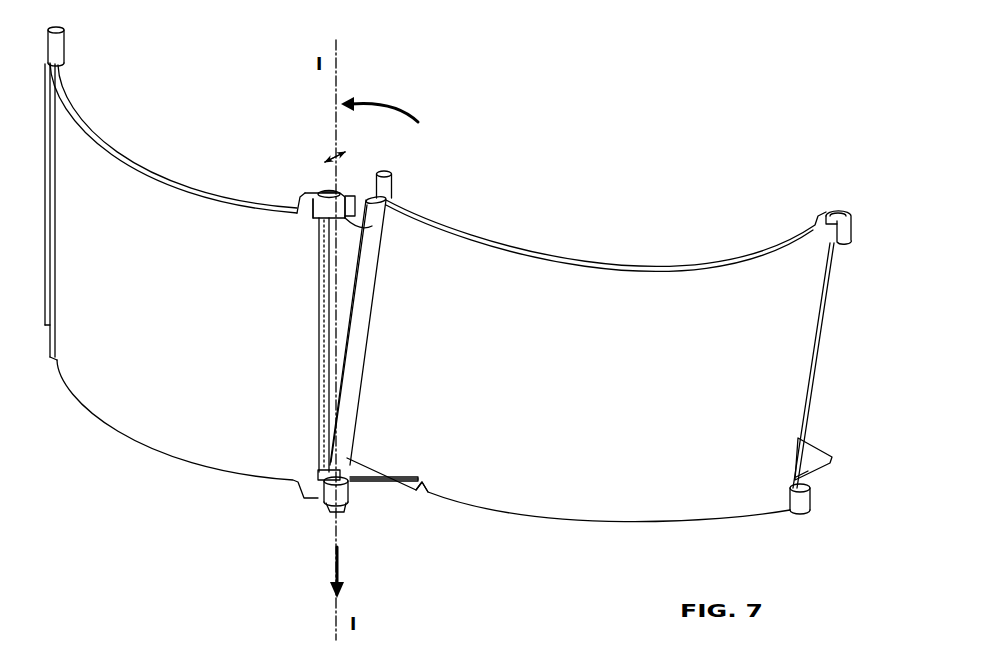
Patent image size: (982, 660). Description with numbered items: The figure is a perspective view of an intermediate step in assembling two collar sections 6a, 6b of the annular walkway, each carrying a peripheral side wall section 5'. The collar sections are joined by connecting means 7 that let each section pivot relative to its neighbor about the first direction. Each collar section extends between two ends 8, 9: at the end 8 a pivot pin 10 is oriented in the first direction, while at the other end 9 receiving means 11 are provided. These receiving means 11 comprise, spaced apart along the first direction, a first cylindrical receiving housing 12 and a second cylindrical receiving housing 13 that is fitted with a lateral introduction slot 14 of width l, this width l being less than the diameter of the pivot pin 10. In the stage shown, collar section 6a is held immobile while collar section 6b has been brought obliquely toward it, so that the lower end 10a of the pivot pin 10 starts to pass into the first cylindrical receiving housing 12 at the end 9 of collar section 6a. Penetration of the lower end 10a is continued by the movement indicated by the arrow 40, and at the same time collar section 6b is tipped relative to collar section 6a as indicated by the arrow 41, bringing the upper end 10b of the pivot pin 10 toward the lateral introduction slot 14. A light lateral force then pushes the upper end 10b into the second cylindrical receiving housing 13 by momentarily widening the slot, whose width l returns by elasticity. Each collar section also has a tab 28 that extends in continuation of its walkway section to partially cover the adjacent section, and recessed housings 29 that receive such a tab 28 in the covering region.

The peripheral side wall section 5' is at (423, 412).
The collar section 6a is at (209, 186).
The collar section 6b is at (624, 256).
The connecting means 7 is at (317, 137).
The end 8 is at (72, 80).
The end 9 is at (334, 302).
The pivot pin 10 is at (358, 374).
The lower end of the pivot pin 10a is at (321, 470).
The upper end of the pivot pin 10b is at (393, 183).
The receiving means 11 is at (354, 198).
The first cylindrical receiving housing 12 is at (330, 510).
The second cylindrical receiving housing 13 is at (322, 163).
The lateral introduction slot 14 is at (348, 229).
The width of the lateral introduction slot l is at (345, 146).
The tab 28 is at (360, 482).
The recessed housing 29 is at (422, 495).
The arrow 40 is at (334, 571).
The arrow 41 is at (398, 106).